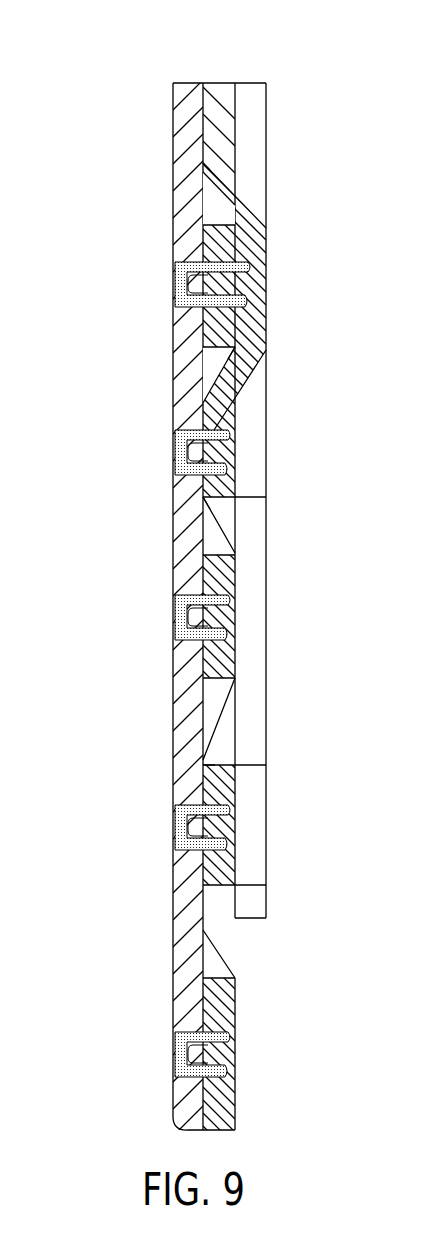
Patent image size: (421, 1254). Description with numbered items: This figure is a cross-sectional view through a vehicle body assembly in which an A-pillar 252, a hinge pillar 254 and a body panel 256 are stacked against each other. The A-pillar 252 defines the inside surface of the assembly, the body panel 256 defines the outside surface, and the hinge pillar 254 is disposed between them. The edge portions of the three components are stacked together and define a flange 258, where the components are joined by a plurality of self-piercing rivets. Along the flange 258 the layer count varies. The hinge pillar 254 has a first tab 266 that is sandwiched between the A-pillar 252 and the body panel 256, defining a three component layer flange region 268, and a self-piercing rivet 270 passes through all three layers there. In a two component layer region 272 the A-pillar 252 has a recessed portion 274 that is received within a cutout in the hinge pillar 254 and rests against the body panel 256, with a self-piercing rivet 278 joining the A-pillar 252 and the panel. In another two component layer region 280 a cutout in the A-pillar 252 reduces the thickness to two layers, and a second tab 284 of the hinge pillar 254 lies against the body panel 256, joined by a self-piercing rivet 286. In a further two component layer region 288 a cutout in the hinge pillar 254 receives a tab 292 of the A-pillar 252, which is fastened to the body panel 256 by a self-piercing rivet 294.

The A-pillar 252 is at (220, 88).
The hinge pillar 254 is at (225, 236).
The body panel 256 is at (196, 88).
The flange 258 is at (90, 68).
The first tab 266 is at (225, 252).
The three component layer flange region 268 is at (136, 231).
The self-piercing rivet 270 is at (184, 294).
The two component layer region 272 is at (136, 399).
The recessed portion 274 is at (230, 416).
The self-piercing rivet 278 is at (184, 448).
The two component layer region 280 is at (136, 569).
The second tab 284 is at (225, 576).
The self-piercing rivet 286 is at (184, 616).
The two component layer region 288 is at (136, 784).
The tab 292 is at (225, 784).
The self-piercing rivet 294 is at (184, 832).